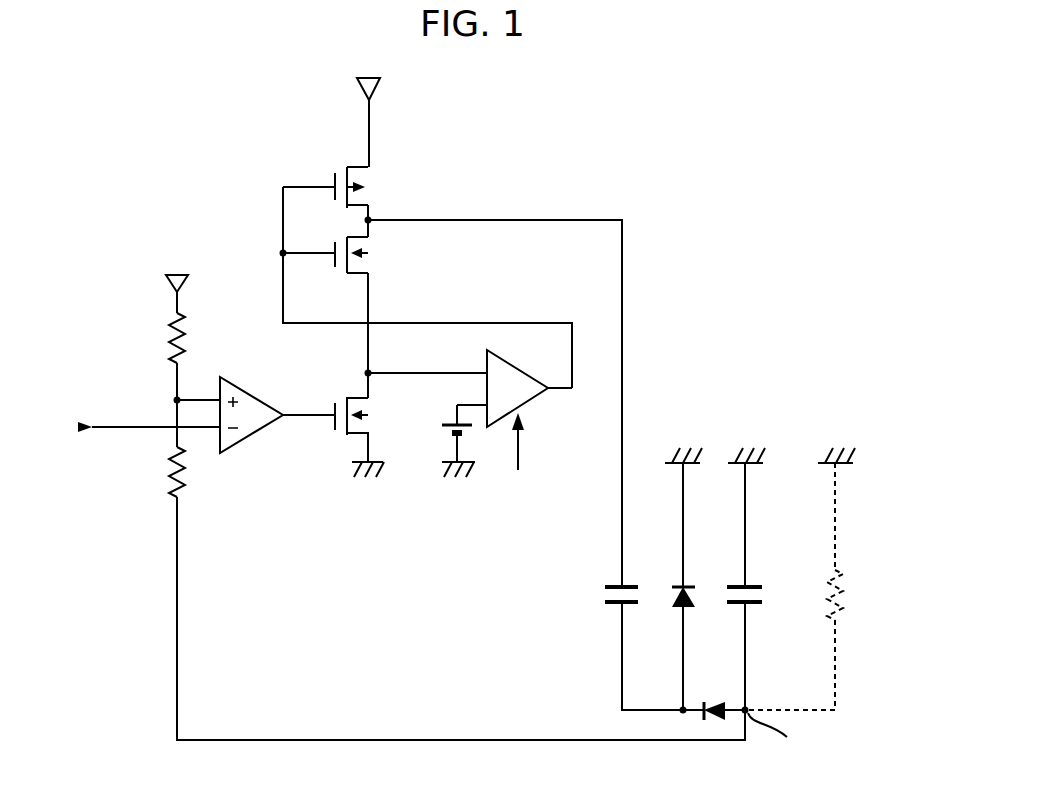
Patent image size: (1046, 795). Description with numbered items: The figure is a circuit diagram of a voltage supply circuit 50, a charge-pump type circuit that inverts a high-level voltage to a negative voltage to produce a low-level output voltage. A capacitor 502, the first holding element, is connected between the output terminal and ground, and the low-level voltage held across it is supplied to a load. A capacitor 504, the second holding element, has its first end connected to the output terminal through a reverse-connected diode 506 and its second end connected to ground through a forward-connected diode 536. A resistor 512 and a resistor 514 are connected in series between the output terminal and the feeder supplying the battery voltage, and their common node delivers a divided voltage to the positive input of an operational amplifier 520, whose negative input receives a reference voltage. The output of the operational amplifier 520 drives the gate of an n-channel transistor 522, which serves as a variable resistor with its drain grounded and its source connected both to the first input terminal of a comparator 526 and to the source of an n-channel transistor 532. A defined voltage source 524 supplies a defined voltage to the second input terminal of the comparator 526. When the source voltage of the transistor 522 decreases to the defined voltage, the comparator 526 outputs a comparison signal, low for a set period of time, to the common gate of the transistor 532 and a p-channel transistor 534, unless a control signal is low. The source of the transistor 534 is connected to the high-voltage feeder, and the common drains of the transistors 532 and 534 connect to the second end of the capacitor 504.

The voltage supply circuit 50 is at (664, 126).
The capacitor (first holding element) 502 is at (752, 585).
The capacitor (second holding element) 504 is at (606, 585).
The diode 506 is at (706, 701).
The resistor 512 is at (172, 492).
The resistor 514 is at (170, 358).
The operational amplifier 520 is at (257, 436).
The n-channel transistor 522 is at (355, 398).
The defined voltage source 524 is at (442, 426).
The comparator (determination unit) 526 is at (532, 405).
The n-channel transistor 532 is at (360, 276).
The p-channel transistor 534 is at (360, 166).
The diode 536 is at (690, 585).